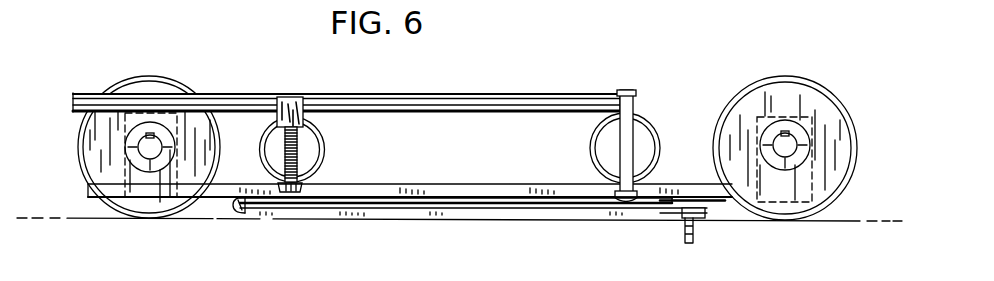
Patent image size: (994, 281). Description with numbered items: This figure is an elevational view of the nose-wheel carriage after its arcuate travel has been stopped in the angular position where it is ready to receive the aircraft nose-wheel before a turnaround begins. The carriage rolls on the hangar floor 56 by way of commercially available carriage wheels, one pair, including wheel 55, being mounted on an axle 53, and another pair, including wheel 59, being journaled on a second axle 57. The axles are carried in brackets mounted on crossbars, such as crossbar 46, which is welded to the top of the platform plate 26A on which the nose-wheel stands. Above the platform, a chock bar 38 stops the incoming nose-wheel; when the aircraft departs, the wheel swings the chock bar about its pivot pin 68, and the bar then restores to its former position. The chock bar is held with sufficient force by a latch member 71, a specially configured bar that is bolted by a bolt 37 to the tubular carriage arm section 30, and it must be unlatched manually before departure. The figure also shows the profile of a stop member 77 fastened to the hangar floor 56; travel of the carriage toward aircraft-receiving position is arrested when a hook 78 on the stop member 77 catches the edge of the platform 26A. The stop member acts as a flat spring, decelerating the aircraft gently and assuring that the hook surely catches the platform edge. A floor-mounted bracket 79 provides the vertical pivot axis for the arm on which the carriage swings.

The platform plate 26A is at (483, 202).
The tubular member 30 is at (324, 130).
The bolt 37 is at (293, 158).
The chock bar 38 is at (587, 103).
The crossbar 46 is at (717, 200).
The axle 53 is at (143, 148).
The carriage wheel 55 is at (163, 88).
The hangar floor 56 is at (858, 222).
The axle 57 is at (783, 145).
The carriage wheel 59 is at (787, 93).
The pin 68 is at (625, 137).
The latch member 71 is at (297, 97).
The stop member 77 is at (508, 218).
The hook 78 is at (240, 202).
The bracket 79 is at (688, 247).